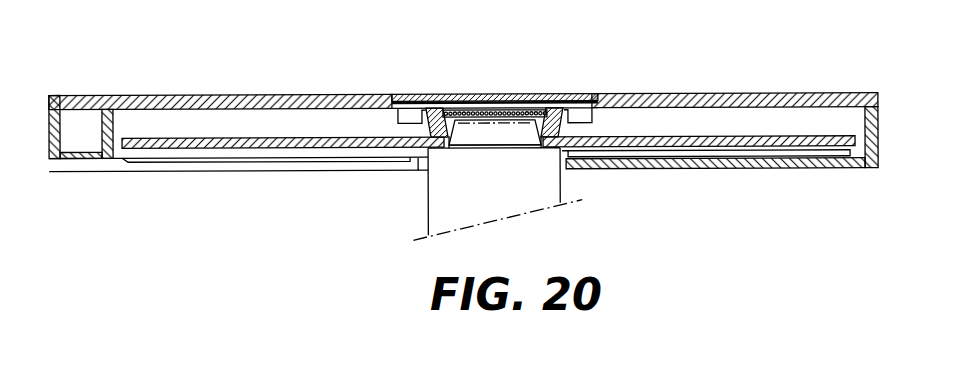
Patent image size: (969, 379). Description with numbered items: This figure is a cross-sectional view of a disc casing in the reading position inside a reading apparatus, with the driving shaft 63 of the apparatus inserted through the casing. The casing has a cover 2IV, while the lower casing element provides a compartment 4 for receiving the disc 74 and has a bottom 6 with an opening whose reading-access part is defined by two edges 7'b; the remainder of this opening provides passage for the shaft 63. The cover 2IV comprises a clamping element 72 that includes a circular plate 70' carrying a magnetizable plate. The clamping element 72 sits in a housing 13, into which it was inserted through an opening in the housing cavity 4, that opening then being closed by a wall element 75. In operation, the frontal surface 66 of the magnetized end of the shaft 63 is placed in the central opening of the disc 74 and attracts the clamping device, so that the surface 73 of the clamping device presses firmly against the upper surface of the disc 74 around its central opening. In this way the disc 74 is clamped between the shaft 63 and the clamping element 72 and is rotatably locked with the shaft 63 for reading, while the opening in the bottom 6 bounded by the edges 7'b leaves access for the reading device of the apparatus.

The compartment 4 is at (216, 125).
The cover 2IV is at (707, 100).
The bottom 6 is at (742, 169).
The disc 74 is at (661, 148).
The edges 7'b is at (266, 196).
The shaft 63 is at (440, 213).
The housing 13 is at (577, 103).
The circular plate 70' is at (495, 77).
The clamping element 72 is at (435, 108).
The frontal surface 66 is at (495, 112).
The wall element 75 is at (535, 120).
The surface 73 is at (547, 146).